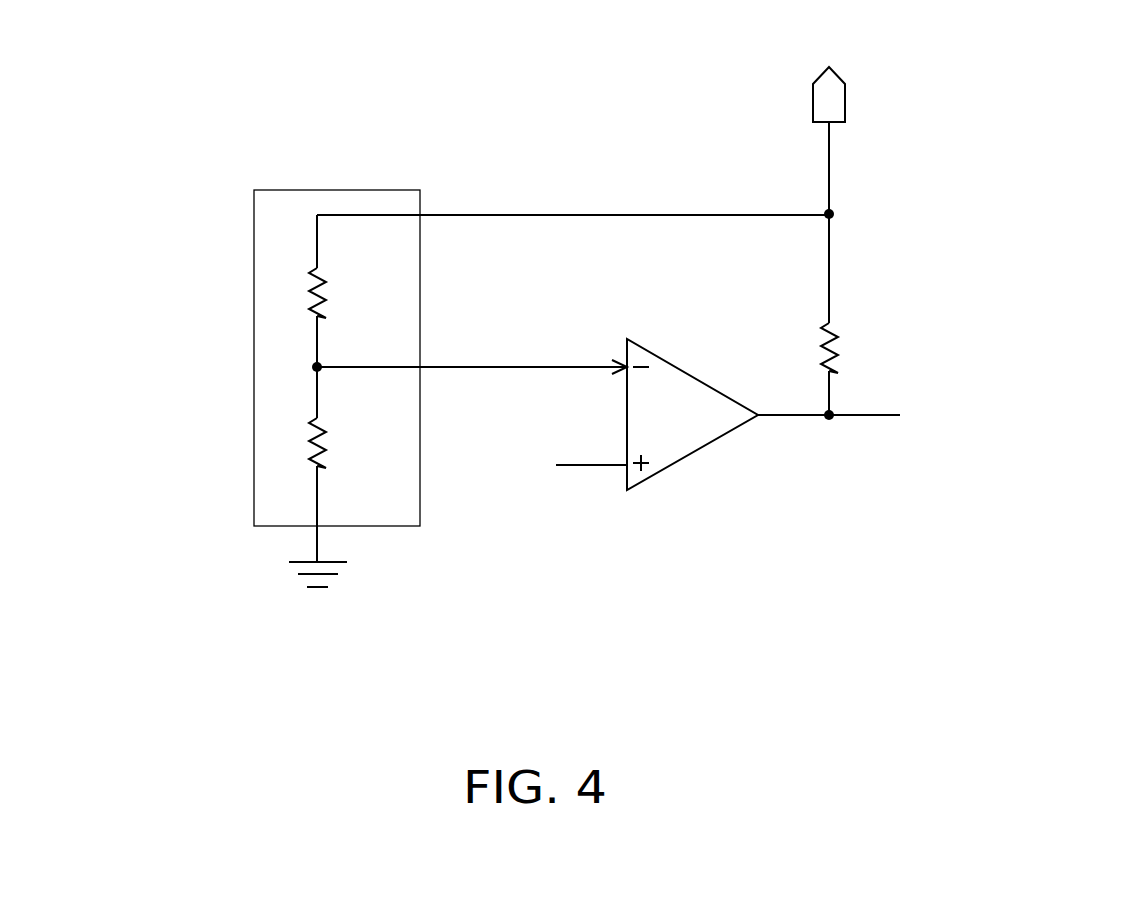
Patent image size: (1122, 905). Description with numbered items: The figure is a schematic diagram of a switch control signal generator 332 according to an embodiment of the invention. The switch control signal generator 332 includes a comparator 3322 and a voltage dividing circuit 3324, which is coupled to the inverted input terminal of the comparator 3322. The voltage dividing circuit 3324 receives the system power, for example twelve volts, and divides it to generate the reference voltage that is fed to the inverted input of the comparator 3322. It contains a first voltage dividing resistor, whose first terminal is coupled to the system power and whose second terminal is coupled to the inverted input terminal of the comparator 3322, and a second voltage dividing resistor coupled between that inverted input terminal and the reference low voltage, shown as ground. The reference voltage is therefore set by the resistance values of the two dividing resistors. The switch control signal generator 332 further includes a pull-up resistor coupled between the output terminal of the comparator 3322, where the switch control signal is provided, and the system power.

The switch control signal generator 332 is at (1083, 541).
The comparator 3322 is at (680, 367).
The voltage dividing circuit 3324 is at (254, 277).